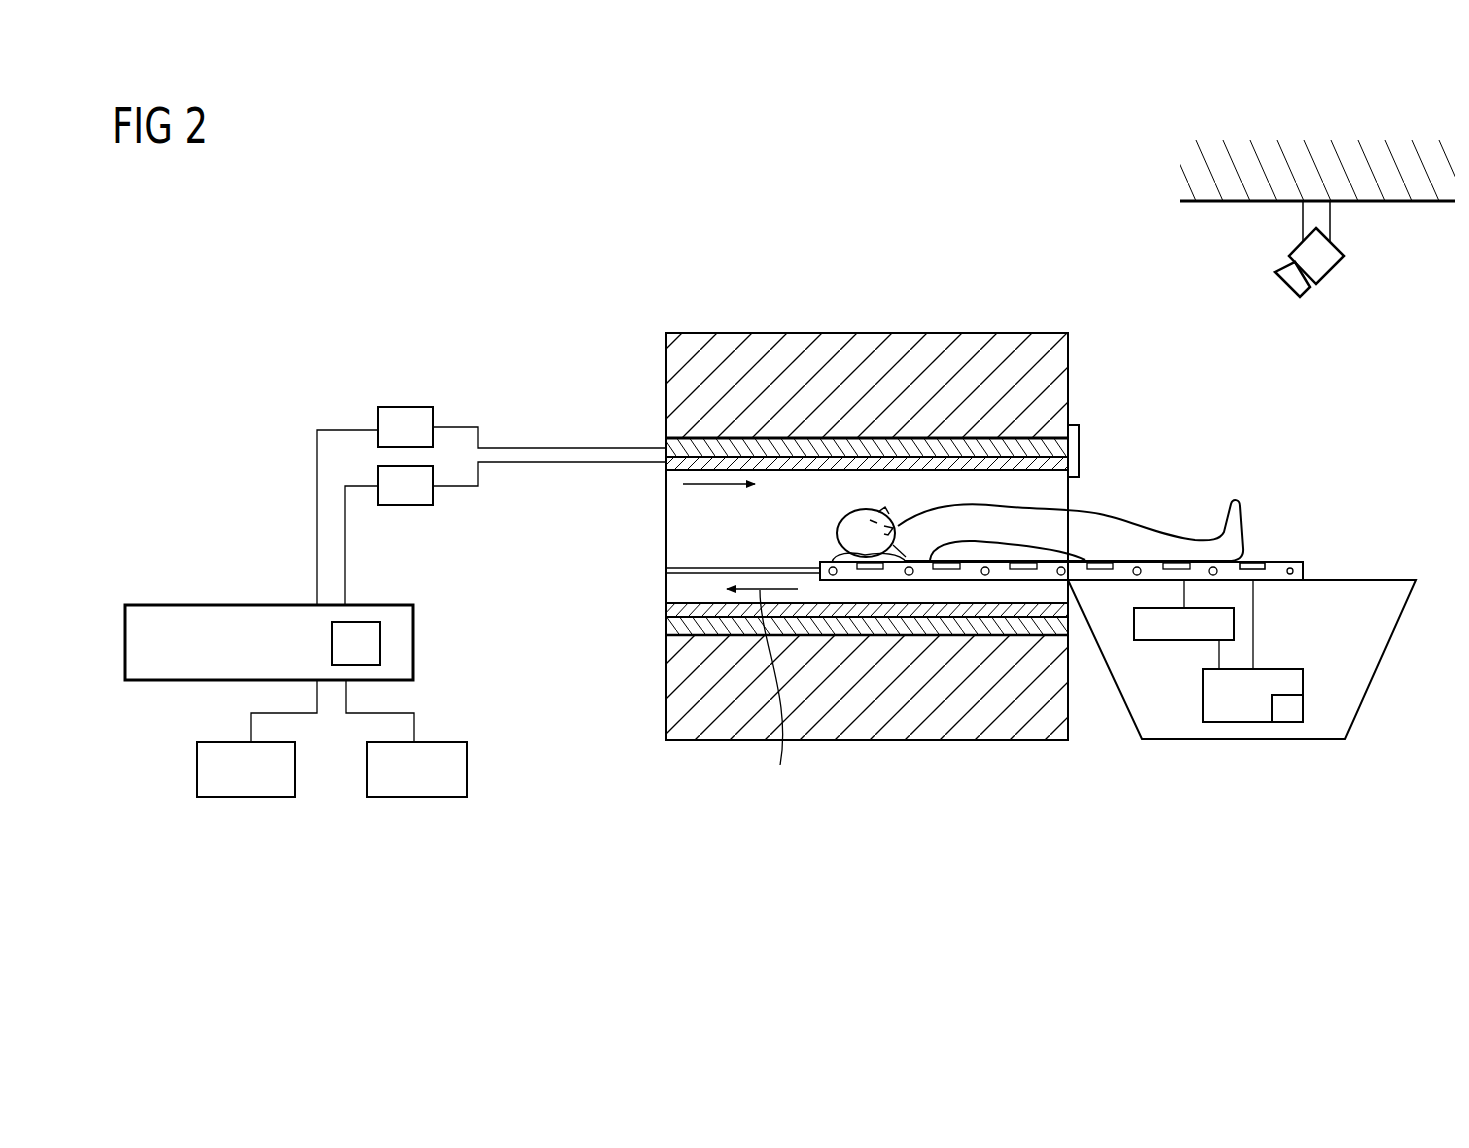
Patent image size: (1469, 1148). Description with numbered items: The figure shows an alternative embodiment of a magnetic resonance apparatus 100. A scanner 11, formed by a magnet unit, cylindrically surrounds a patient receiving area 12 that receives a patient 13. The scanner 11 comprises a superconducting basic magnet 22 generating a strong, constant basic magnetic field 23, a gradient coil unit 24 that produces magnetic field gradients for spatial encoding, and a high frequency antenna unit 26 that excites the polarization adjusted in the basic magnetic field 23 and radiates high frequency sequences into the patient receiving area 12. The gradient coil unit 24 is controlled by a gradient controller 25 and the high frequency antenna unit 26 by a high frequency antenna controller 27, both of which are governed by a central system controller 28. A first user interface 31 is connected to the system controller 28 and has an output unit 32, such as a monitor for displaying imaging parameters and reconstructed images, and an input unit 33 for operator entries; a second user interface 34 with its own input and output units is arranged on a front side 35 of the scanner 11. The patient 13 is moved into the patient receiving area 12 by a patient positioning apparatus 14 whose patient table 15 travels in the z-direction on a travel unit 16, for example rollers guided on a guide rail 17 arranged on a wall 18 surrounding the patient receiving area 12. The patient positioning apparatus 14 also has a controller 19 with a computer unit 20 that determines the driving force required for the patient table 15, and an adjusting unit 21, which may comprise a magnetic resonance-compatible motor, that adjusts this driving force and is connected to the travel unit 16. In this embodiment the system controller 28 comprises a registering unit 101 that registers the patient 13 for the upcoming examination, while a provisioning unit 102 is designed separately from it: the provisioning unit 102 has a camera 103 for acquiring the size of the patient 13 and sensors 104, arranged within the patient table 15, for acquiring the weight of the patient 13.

The scanner unit 11 is at (997, 322).
The patient receiving area 12 is at (1030, 497).
The patient 13 is at (1195, 552).
The patient positioning apparatus 14 is at (1345, 556).
The patient table 15 is at (1270, 562).
The travel unit 16 is at (1292, 566).
The guide rail 17 is at (766, 566).
The wall 18 is at (815, 472).
The controller 19 is at (1303, 680).
The computer unit 20 is at (1290, 722).
The adjusting unit 21 is at (1172, 640).
The basic magnet 22 is at (855, 345).
The basic magnetic field 23 is at (703, 488).
The gradient coil unit 24 is at (905, 627).
The gradient controller 25 is at (405, 407).
The high frequency antenna unit 26 is at (853, 610).
The high frequency antenna controller 27 is at (405, 505).
The system controller 28 is at (280, 605).
The first user interface 31 is at (341, 797).
The output unit 32 is at (197, 770).
The input unit 33 is at (467, 768).
The second user interface 34 is at (1080, 445).
The front side 35 is at (1072, 373).
The magnetic resonance apparatus 100 is at (963, 772).
The registering unit 101 is at (380, 645).
The provisioning unit 102 is at (1349, 274).
The camera 103 is at (1330, 282).
The sensors 104 is at (1254, 560).